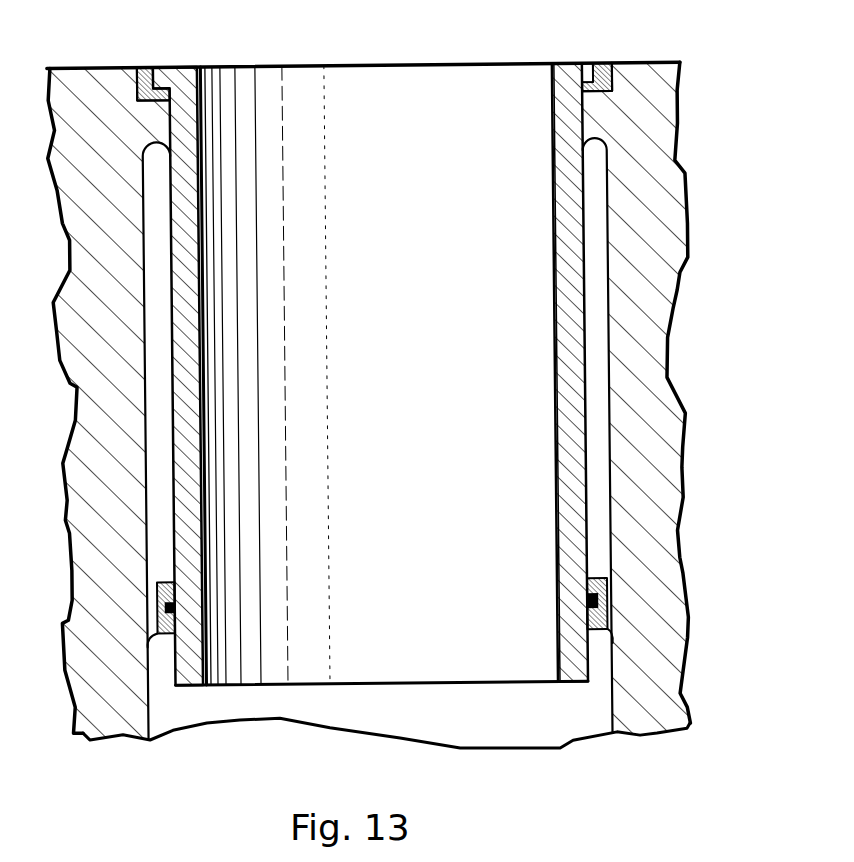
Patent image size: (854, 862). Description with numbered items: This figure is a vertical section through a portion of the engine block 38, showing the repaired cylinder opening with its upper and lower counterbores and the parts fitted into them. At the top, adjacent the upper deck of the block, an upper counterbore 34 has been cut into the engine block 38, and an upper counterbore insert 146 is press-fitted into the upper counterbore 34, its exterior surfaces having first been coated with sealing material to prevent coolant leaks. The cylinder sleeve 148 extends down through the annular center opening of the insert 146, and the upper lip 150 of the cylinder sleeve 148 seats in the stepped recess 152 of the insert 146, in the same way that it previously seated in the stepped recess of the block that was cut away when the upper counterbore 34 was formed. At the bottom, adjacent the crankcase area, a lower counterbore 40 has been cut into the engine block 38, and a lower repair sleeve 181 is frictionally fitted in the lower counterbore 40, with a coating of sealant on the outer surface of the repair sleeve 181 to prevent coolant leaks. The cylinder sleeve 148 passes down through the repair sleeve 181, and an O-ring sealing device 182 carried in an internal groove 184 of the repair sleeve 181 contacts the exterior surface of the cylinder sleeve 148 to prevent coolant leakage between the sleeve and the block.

The upper counterbore 34 is at (615, 85).
The engine block 38 is at (684, 229).
The lower counterbore 40 is at (590, 635).
The upper counterbore insert 146 is at (606, 65).
The cylinder sleeve 148 is at (562, 167).
The upper lip 150 is at (590, 60).
The stepped recess 152 is at (590, 79).
The lower repair sleeve 181 is at (614, 597).
The O-ring sealing device 182 is at (585, 609).
The internal groove 184 is at (588, 595).